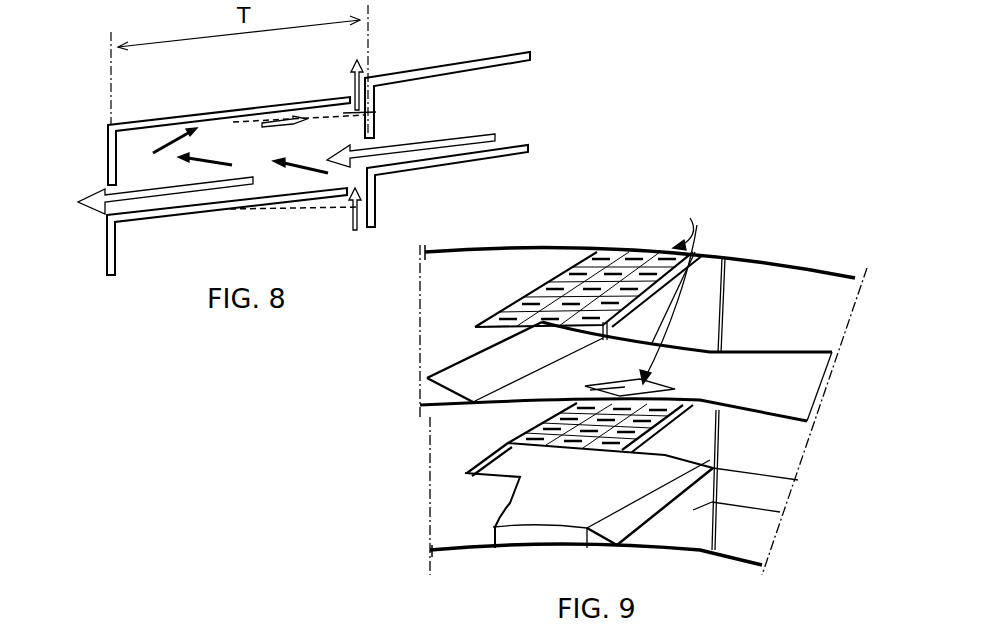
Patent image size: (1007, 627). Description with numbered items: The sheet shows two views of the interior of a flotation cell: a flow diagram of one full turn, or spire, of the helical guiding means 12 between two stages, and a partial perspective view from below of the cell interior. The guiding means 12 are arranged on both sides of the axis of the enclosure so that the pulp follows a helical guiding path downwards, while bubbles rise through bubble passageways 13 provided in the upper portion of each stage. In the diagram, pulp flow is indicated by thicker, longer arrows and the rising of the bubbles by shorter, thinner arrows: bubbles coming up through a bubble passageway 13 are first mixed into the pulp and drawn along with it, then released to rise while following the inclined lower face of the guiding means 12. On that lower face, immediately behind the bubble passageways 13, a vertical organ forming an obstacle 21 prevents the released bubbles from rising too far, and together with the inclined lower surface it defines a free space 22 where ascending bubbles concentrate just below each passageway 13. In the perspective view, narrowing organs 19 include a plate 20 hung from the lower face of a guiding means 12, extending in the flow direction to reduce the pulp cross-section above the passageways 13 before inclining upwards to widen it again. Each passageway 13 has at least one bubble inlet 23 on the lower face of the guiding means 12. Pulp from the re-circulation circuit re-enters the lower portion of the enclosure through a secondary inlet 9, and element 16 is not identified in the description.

In FIG. 9, the secondary inlet 9 is at (683, 528).
In FIG. 8, the guiding means 12 is at (180, 118).
In FIG. 8, the bubble passageways 13 is at (350, 90).
In FIG. 9, the bubble passageways 13 is at (669, 288).
In FIG. 9, the vane 16 is at (474, 623).
In FIG. 9, the narrowing organs 19 is at (730, 362).
In FIG. 9, the plate 20 is at (768, 345).
In FIG. 8, the organ forming an obstacle 21 is at (108, 158).
In FIG. 9, the organ forming an obstacle 21 is at (712, 288).
In FIG. 8, the free space 22 is at (380, 88).
In FIG. 9, the free space 22 is at (522, 265).
In FIG. 9, the bubble inlet 23 is at (632, 258).